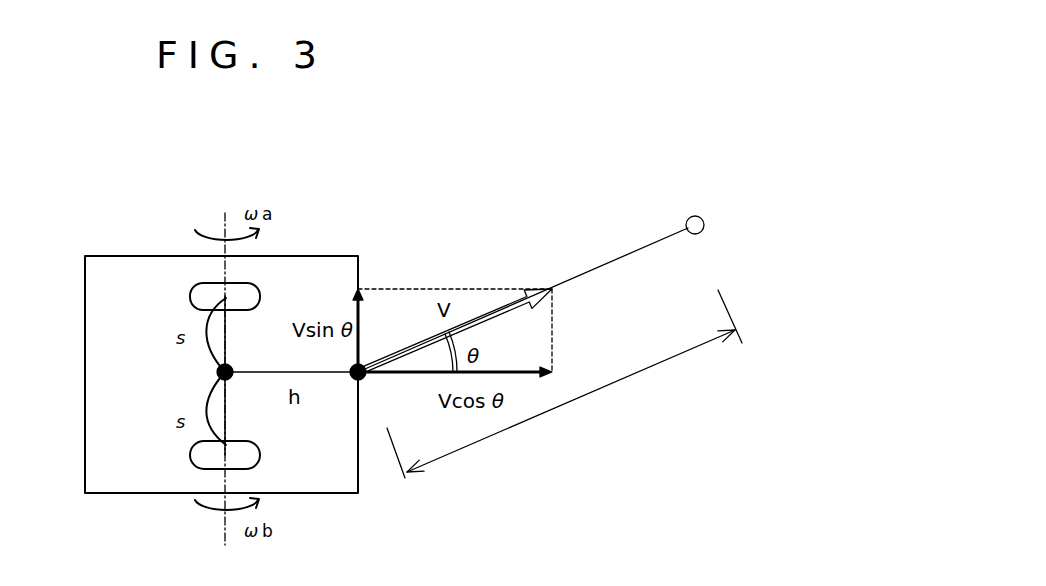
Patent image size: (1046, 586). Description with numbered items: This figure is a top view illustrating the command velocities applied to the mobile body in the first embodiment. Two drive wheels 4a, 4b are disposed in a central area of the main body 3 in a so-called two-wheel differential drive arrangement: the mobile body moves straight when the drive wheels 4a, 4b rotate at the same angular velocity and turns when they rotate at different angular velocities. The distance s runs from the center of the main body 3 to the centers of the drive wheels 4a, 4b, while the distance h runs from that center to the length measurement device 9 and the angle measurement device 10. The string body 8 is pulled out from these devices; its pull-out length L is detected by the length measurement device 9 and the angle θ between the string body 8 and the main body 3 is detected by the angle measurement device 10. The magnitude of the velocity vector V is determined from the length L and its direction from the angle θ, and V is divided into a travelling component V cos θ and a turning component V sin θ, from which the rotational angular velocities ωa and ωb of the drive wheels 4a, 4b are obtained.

The main body 3 is at (98, 272).
The drive wheel 4a is at (192, 295).
The drive wheel 4b is at (197, 455).
The string body 8 is at (617, 258).
The length measurement device 9 is at (360, 376).
The angle measurement device 10 is at (564, 419).